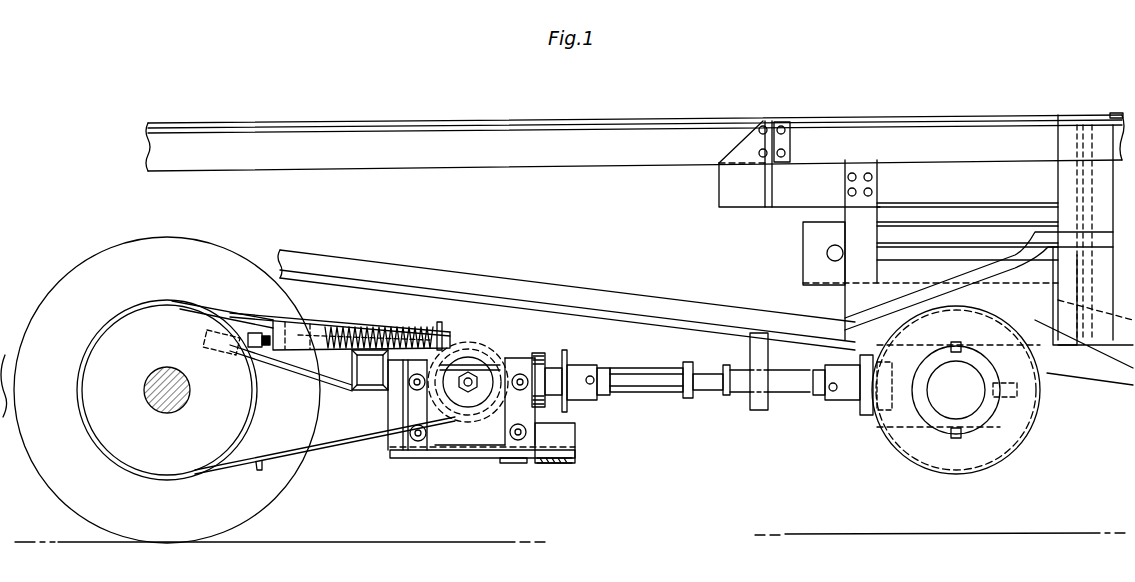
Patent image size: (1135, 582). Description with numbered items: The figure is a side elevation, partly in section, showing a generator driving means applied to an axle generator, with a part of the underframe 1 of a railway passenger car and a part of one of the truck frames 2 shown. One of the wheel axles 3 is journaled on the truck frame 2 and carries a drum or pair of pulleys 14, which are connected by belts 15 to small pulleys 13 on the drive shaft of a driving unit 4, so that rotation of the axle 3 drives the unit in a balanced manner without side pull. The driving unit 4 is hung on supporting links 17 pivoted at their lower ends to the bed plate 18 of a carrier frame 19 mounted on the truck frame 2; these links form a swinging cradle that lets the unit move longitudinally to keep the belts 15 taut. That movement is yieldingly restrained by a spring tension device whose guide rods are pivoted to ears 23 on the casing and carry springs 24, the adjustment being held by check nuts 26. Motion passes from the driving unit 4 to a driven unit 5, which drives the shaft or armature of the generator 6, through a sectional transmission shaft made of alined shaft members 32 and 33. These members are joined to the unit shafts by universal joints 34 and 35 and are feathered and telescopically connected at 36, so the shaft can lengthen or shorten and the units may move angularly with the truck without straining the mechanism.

The underframe 1 is at (793, 200).
The truck frame 2 is at (360, 390).
The wheel axle 3 is at (165, 370).
The driving unit 4 is at (527, 355).
The driven unit 5 is at (925, 432).
The generator 6 is at (1025, 426).
The pulleys 13 is at (475, 368).
The pulleys 14 is at (132, 442).
The belts 15 is at (287, 446).
The supporting links 17 is at (410, 410).
The bed plate 18 is at (492, 460).
The carrier frame 19 is at (397, 440).
The ears 23 is at (442, 330).
The springs 24 is at (361, 326).
The check nuts 26 is at (269, 321).
The shaft member 32 is at (652, 376).
The shaft member 33 is at (792, 380).
The universal joint 34 is at (597, 360).
The universal joint 35 is at (832, 410).
The feathered telescopic connection 36 is at (712, 380).